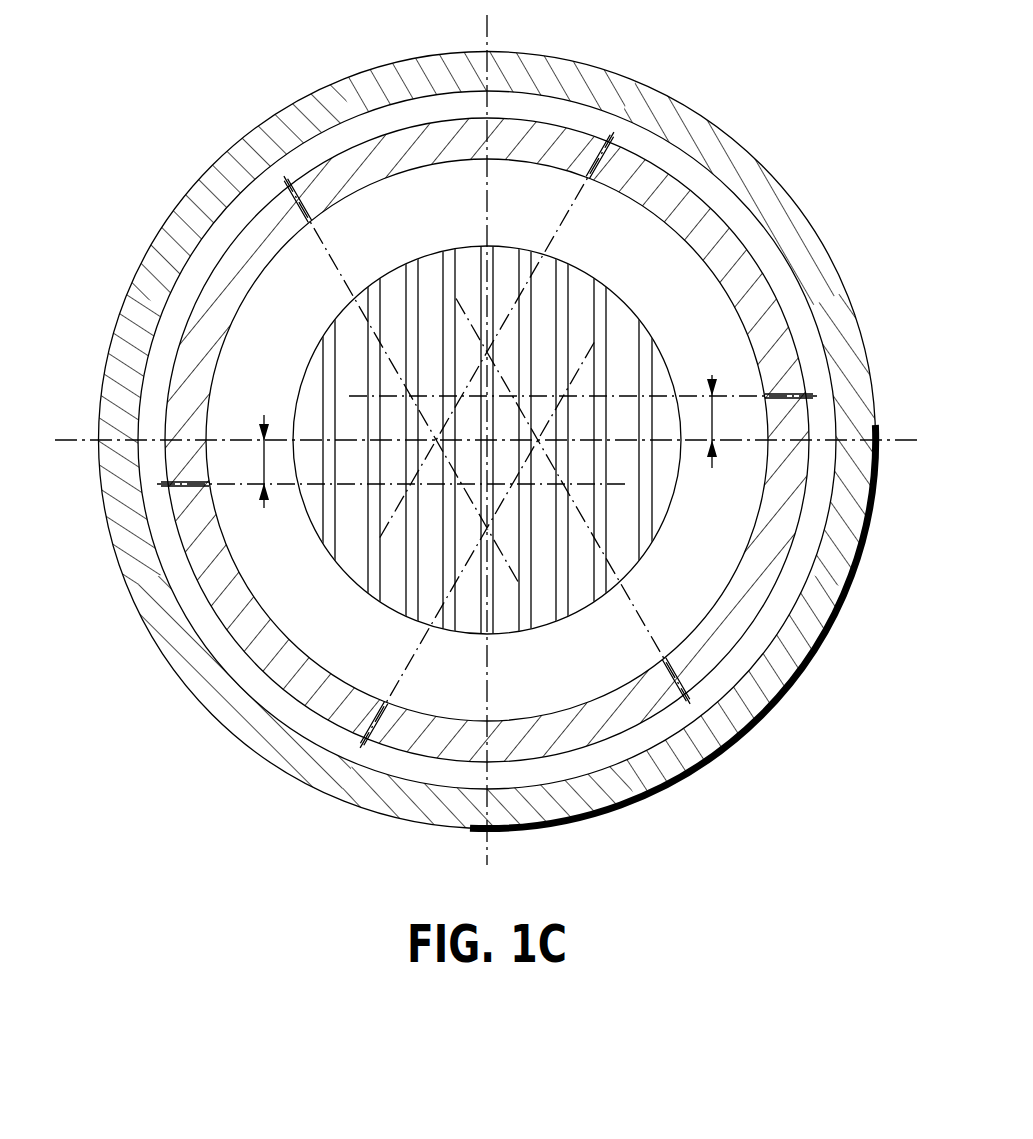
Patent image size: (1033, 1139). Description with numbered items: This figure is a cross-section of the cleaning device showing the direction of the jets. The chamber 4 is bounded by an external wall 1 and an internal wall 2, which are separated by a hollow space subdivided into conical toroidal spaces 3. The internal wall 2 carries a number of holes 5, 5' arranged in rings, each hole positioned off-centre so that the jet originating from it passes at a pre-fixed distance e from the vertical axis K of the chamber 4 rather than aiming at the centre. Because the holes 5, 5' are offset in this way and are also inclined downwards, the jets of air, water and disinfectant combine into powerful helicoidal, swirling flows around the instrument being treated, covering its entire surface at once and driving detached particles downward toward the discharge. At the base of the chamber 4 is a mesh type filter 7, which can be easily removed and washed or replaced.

The external wall 1 is at (690, 133).
The internal wall 2 is at (698, 236).
The conical toroidal space 3 is at (806, 560).
The chamber 4 is at (697, 315).
The hole 5 is at (487, 440).
The hole 5' is at (330, 207).
The mesh type filter 7 is at (545, 605).